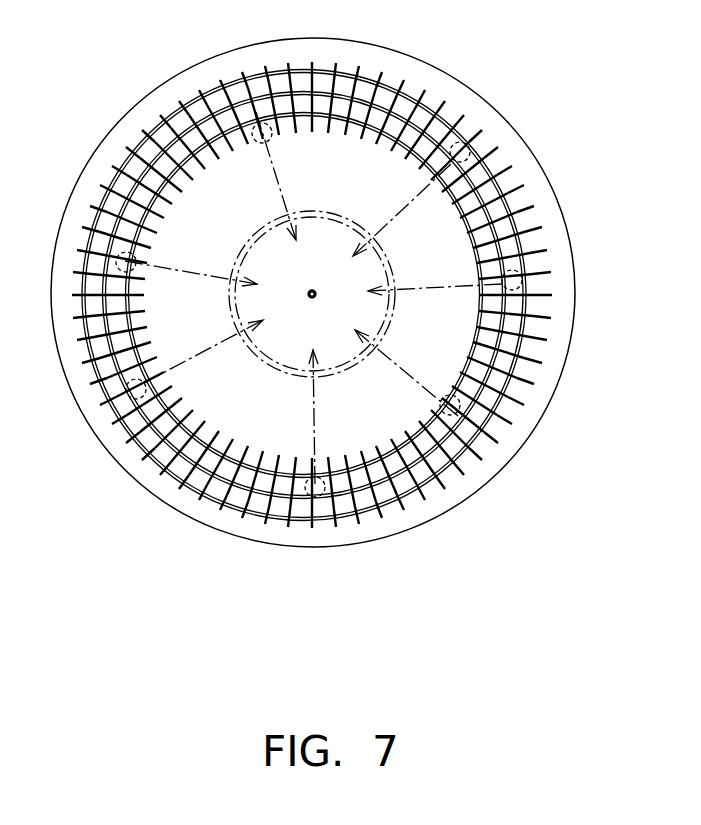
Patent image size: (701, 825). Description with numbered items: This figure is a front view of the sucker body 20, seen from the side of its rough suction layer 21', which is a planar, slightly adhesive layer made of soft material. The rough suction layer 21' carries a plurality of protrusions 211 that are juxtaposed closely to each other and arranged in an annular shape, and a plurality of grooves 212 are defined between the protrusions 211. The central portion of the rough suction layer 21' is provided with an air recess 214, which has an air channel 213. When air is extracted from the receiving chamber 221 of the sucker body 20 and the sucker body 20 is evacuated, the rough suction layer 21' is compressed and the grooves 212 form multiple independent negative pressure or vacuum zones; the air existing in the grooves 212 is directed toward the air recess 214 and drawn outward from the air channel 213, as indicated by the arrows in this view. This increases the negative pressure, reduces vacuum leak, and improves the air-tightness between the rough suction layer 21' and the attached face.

The sucker body 20 is at (110, 97).
The rough suction layer 21' is at (313, 280).
The protrusions 211 is at (507, 417).
The grooves 212 is at (522, 338).
The air channel 213 is at (313, 292).
The air recess 214 is at (432, 250).
The receiving chamber 221 is at (433, 502).